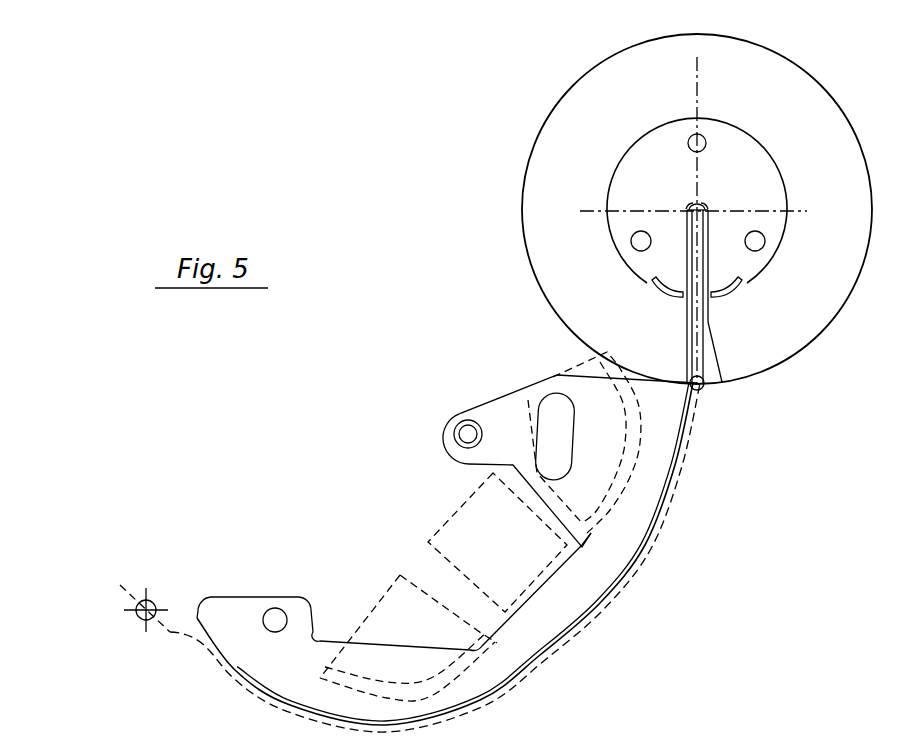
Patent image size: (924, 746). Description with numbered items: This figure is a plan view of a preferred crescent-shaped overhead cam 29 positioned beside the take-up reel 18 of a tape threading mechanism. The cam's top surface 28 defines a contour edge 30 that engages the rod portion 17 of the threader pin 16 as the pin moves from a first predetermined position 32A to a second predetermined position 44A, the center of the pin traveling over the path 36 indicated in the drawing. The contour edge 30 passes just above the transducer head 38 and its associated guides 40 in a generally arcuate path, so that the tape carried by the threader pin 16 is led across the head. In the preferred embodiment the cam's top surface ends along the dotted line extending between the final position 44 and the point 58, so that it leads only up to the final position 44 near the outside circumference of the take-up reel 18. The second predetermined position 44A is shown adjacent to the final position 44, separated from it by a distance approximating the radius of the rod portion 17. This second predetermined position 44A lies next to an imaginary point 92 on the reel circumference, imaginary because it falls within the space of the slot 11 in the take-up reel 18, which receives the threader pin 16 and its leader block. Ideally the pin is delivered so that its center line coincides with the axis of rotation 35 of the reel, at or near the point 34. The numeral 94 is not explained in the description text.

The take-up reel 18 is at (545, 165).
The drum rim 94 is at (851, 297).
The slot 11 is at (713, 309).
The point 34 is at (687, 205).
The axis of rotation 35 is at (708, 205).
The imaginary point 92 is at (708, 373).
The threader pin 16 is at (708, 387).
The final position 44 is at (691, 388).
The second predetermined position 44A is at (706, 392).
The rod portion 17 is at (698, 404).
The path 36 is at (692, 446).
The first predetermined position 32A is at (138, 619).
The overhead cam 29 is at (488, 399).
The point 58 is at (562, 377).
The top surface 28 is at (600, 590).
The contour edge 30 is at (662, 502).
The guides 40 is at (640, 446).
The transducer head 38 is at (510, 552).